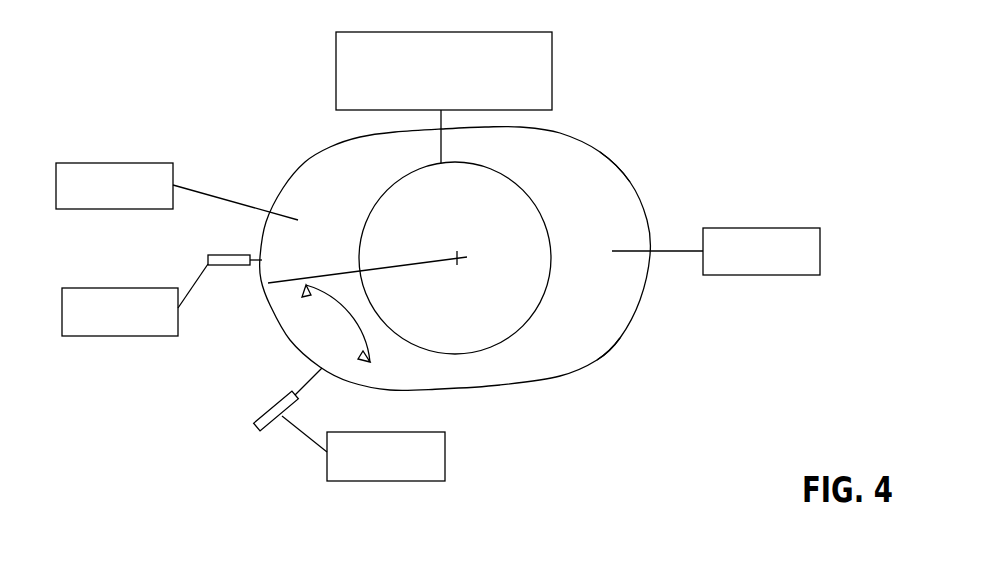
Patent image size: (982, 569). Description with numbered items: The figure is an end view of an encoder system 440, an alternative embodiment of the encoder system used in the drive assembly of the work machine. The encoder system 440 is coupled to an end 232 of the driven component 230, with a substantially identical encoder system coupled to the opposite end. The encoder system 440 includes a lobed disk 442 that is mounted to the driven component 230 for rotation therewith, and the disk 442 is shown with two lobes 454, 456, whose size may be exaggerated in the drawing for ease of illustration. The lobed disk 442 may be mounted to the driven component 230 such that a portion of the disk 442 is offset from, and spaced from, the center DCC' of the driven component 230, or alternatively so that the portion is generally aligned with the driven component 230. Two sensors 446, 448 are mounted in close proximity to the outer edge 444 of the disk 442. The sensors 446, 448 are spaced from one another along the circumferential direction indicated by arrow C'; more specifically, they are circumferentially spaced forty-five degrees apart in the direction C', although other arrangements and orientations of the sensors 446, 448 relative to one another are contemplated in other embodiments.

The encoder system 440 is at (597, 51).
The driven component 230 is at (410, 30).
The end of the driven component 232 is at (372, 208).
The center of the driven component DCC' is at (562, 183).
The lobed disk 442 is at (631, 182).
The outer edge of the disk 444 is at (598, 361).
The sensor 446 is at (138, 287).
The sensor 448 is at (402, 432).
The lobe 454 is at (131, 162).
The lobe 456 is at (778, 227).
The circumferential direction arrow C' is at (297, 325).